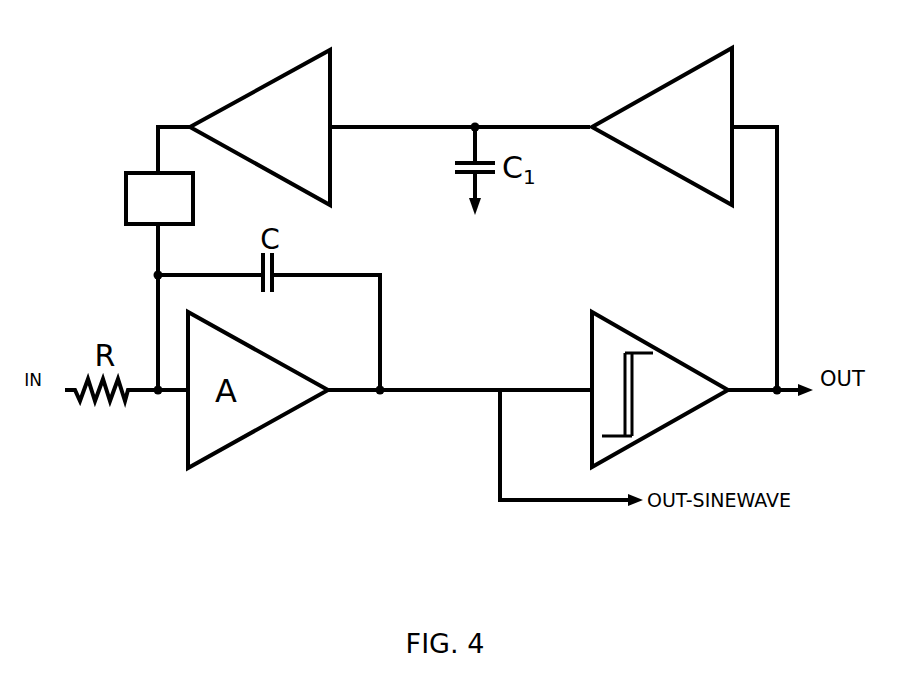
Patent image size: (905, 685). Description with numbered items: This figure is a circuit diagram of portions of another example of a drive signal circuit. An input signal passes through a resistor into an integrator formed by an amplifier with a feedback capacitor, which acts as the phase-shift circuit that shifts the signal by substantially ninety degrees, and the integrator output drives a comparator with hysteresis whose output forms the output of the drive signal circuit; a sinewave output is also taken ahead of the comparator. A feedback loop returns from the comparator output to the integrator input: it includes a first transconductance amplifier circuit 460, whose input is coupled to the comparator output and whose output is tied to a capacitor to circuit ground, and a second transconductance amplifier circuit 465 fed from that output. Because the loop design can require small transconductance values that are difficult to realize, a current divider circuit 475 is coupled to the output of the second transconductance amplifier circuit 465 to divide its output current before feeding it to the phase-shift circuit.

The first transconductance amplifier circuit 460 is at (733, 73).
The second transconductance amplifier circuit 465 is at (332, 73).
The current divider circuit 475 is at (126, 192).